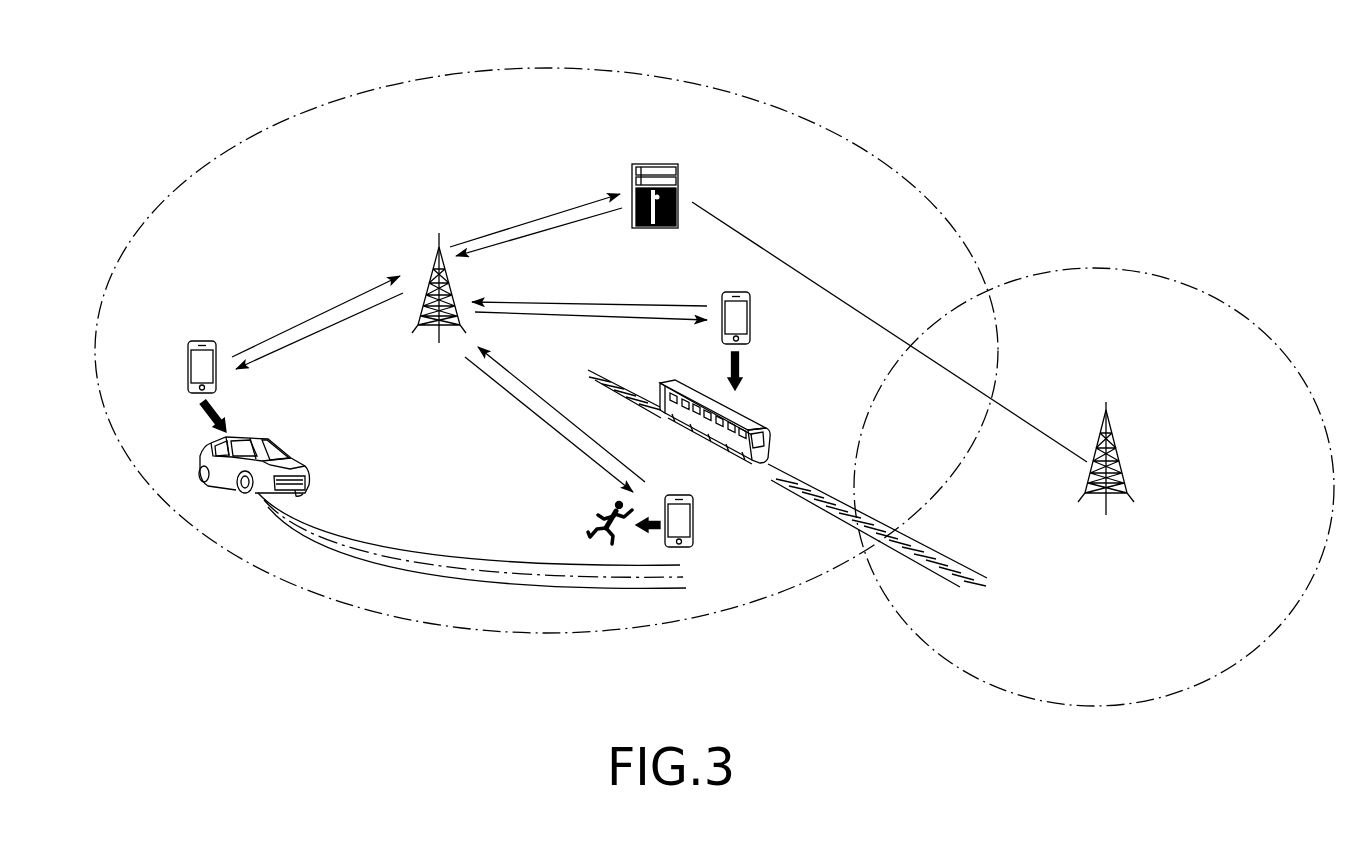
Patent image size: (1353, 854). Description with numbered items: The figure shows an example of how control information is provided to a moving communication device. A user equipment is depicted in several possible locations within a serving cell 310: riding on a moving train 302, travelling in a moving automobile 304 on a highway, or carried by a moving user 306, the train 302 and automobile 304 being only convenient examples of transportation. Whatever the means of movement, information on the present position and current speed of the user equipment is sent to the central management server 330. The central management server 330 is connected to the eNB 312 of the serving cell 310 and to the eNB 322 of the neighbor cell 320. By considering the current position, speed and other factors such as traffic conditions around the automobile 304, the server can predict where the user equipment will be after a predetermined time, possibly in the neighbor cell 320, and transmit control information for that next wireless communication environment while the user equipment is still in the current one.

The moving train 302 is at (745, 418).
The moving automobile 304 is at (308, 473).
The moving user 306 is at (586, 527).
The serving cell 310 is at (544, 66).
The eNB of serving cell 312 is at (436, 262).
The neighbor cell 320 is at (1097, 267).
The eNB of neighbor cell 322 is at (1120, 460).
The central management server 330 is at (680, 181).